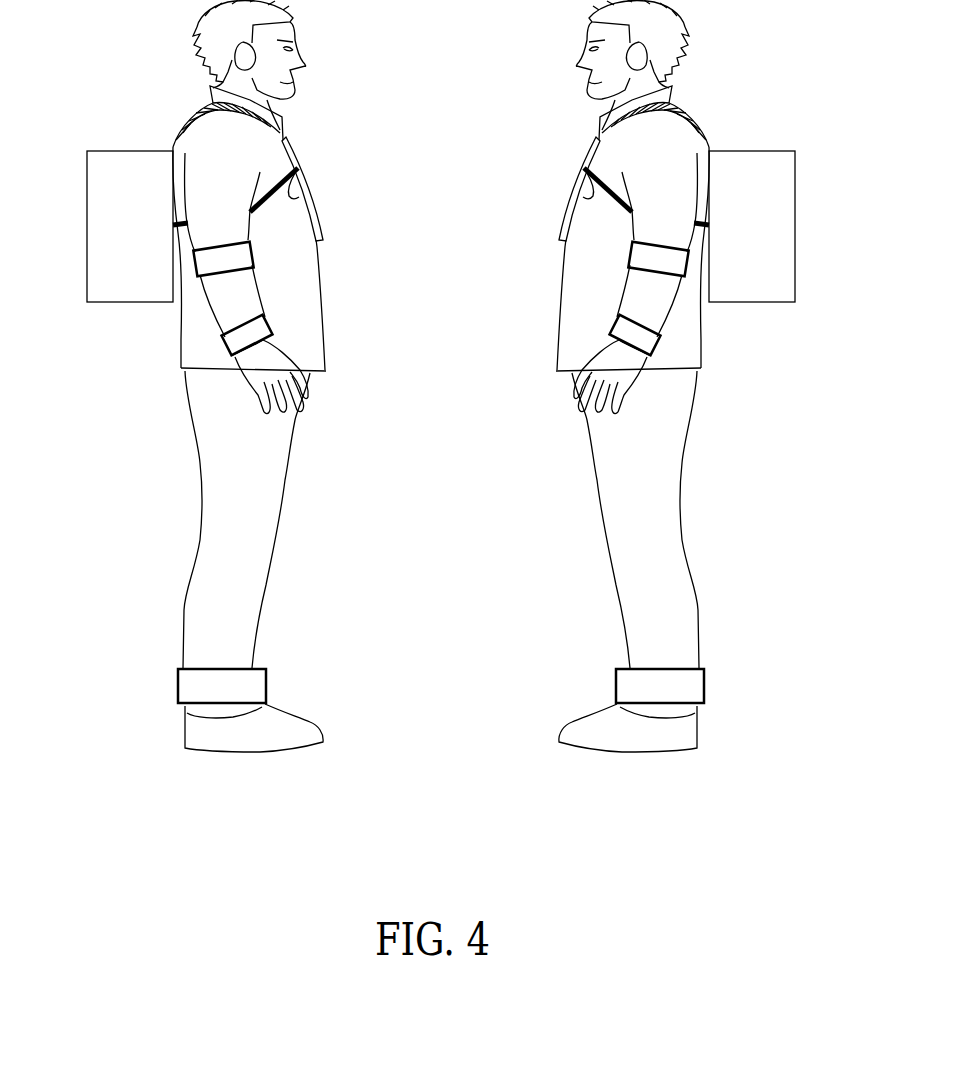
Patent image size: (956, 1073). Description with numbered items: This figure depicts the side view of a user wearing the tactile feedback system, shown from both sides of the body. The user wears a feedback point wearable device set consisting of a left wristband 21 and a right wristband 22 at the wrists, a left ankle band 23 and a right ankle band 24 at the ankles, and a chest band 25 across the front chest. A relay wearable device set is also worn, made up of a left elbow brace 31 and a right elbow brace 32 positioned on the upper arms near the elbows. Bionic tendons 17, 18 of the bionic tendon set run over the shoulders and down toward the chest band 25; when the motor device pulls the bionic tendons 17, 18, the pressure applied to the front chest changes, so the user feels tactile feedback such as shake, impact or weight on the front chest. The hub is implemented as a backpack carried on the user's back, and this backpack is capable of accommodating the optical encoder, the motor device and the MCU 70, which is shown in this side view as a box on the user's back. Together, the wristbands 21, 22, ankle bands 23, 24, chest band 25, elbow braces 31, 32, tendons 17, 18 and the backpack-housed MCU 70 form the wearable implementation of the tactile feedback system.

The bionic tendon 17 is at (583, 197).
The bionic tendon 18 is at (299, 197).
The left wristband 21 is at (626, 329).
The right wristband 22 is at (256, 329).
The left ankle band 23 is at (694, 687).
The right ankle band 24 is at (188, 687).
The chest band 25 is at (323, 216).
The left elbow brace 31 is at (639, 257).
The right elbow brace 32 is at (243, 257).
The MCU 70 is at (143, 243).